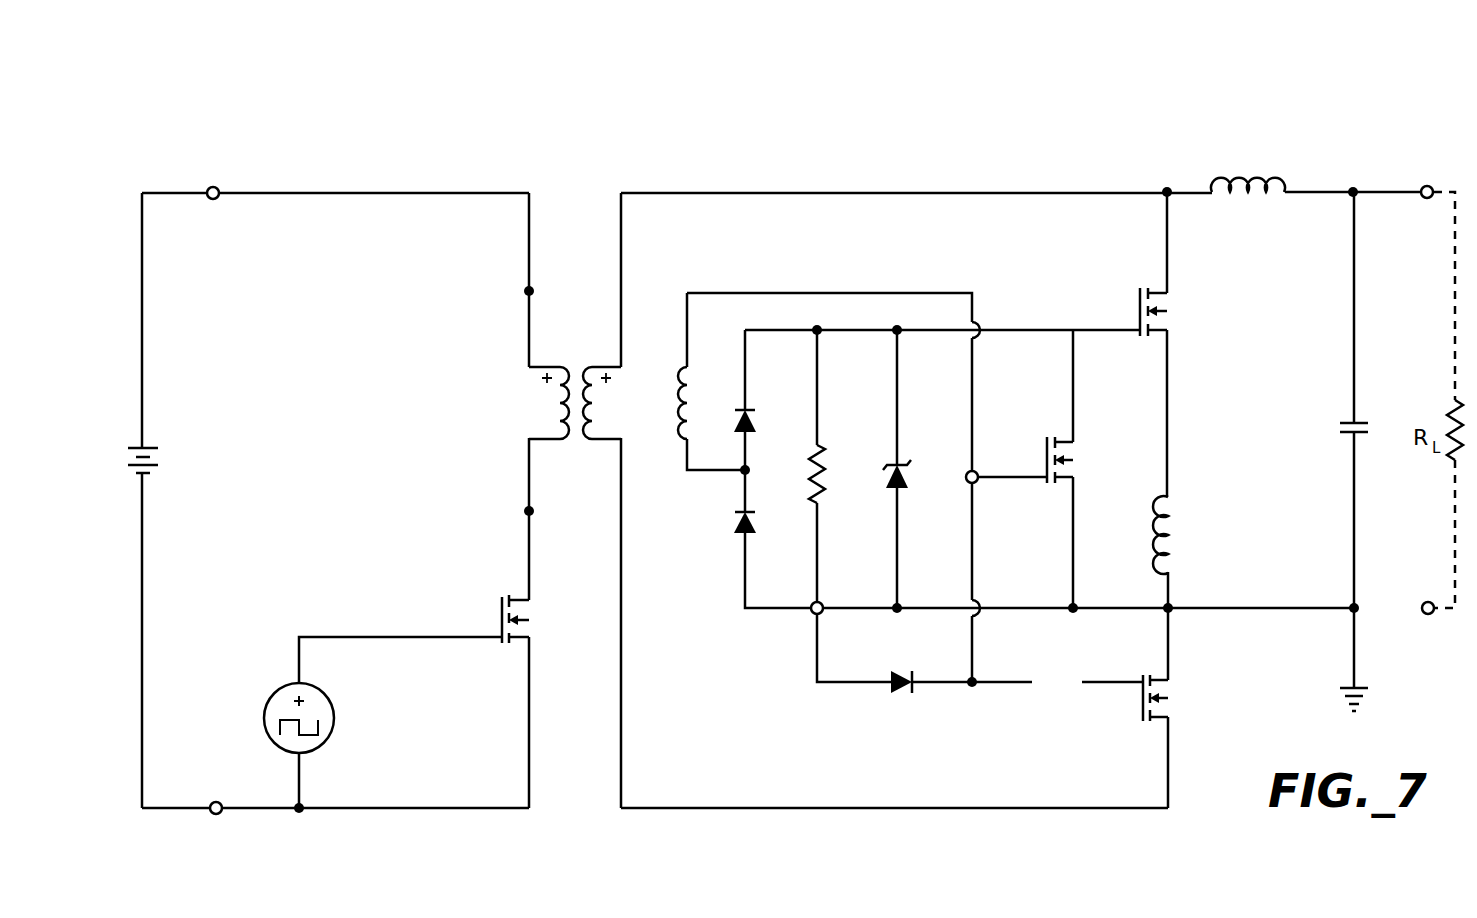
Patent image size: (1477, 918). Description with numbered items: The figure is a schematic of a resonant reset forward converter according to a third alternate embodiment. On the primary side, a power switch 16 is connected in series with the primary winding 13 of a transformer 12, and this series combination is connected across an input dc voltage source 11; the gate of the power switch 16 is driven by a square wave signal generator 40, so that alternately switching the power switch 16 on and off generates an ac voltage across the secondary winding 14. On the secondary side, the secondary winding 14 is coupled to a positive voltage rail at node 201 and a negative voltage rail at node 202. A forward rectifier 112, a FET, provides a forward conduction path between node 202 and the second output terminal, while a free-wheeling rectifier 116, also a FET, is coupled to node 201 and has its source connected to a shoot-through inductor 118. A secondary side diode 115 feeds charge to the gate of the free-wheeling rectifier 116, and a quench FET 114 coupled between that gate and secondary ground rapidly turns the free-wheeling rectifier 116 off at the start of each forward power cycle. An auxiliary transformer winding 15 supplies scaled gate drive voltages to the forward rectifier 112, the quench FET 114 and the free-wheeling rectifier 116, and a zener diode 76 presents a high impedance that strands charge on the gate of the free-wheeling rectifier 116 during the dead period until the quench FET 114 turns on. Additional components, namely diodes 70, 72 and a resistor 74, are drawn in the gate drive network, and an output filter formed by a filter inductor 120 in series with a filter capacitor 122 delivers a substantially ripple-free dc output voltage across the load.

The input dc voltage source 11 is at (150, 447).
The transformer 12 is at (577, 371).
The primary winding 13 is at (560, 402).
The secondary winding 14 is at (592, 400).
The auxiliary transformer winding 15 is at (687, 365).
The power switch 16 is at (502, 620).
The square wave signal generator 40 is at (334, 718).
The diode 70 is at (744, 522).
The diode 72 is at (912, 672).
The resistor 74 is at (822, 470).
The zener diode 76 is at (897, 462).
The forward rectifier 112 is at (1140, 700).
The quench FET 114 is at (1046, 460).
The secondary side diode 115 is at (742, 410).
The free-wheeling rectifier 116 is at (1139, 315).
The shoot-through inductor 118 is at (1168, 536).
The filter inductor 120 is at (1250, 180).
The filter capacitor 122 is at (1349, 434).
The node 201 is at (1165, 189).
The node 202 is at (1071, 611).